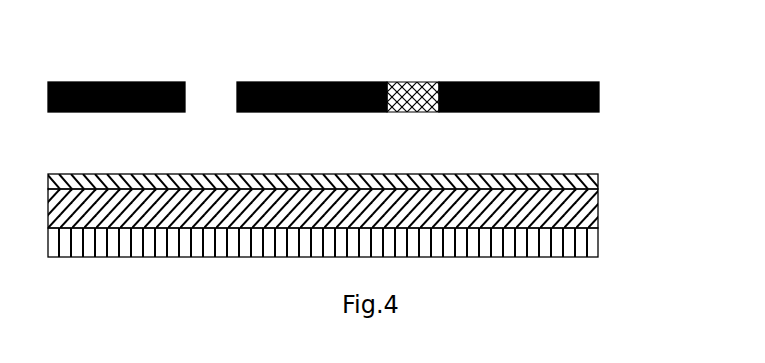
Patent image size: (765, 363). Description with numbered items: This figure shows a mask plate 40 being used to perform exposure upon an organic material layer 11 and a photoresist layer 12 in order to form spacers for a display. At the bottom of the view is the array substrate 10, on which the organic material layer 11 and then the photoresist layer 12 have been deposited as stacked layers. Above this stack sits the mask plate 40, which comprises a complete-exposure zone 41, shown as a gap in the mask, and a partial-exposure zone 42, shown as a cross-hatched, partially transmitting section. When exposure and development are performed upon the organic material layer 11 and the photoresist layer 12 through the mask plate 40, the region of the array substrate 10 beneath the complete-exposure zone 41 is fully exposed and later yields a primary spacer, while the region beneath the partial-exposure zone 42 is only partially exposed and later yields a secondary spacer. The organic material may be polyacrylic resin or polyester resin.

The array substrate 10 is at (588, 242).
The organic material layer 11 is at (598, 212).
The photoresist layer 12 is at (598, 178).
The mask plate 40 is at (366, 69).
The complete-exposure zone 41 is at (213, 98).
The partial-exposure zone 42 is at (430, 87).